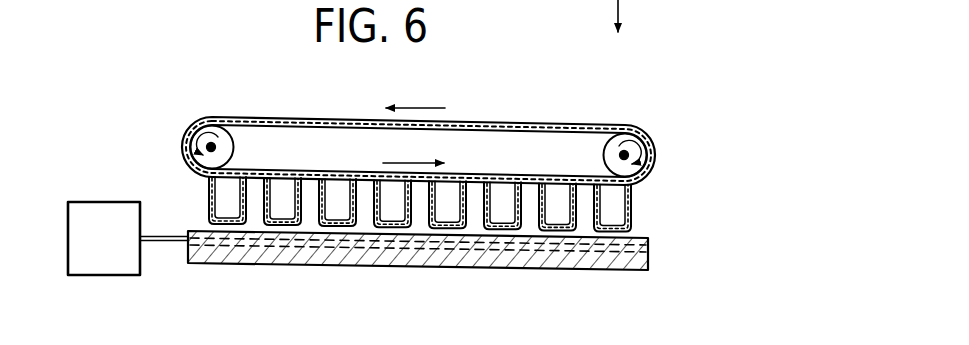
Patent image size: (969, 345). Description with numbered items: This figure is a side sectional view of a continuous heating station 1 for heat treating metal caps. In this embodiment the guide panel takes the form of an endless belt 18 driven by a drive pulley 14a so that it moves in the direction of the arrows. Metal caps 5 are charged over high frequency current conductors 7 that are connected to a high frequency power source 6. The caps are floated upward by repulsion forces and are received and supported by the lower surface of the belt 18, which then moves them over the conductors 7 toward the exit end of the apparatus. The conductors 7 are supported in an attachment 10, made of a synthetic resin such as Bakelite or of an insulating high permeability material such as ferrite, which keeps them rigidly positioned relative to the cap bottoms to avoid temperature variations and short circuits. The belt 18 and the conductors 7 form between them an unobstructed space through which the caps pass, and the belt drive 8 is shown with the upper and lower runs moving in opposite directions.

The continuous heating station 1 is at (340, 271).
The metal caps 5 is at (204, 200).
The high frequency power source 6 is at (78, 239).
The conductors 7 is at (613, 258).
The conveyor belt 8 is at (583, 122).
The attachment 10 is at (546, 270).
The drive pulley 14a is at (656, 147).
The endless belt 18 is at (500, 177).